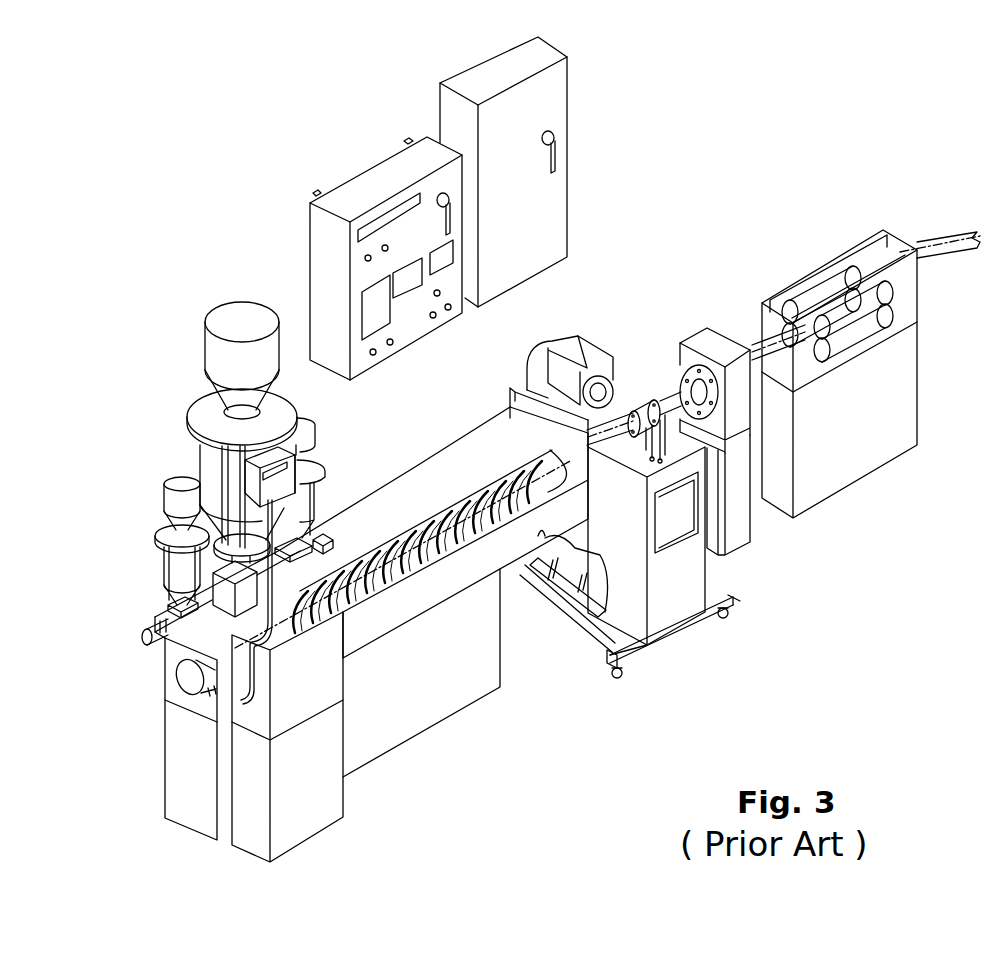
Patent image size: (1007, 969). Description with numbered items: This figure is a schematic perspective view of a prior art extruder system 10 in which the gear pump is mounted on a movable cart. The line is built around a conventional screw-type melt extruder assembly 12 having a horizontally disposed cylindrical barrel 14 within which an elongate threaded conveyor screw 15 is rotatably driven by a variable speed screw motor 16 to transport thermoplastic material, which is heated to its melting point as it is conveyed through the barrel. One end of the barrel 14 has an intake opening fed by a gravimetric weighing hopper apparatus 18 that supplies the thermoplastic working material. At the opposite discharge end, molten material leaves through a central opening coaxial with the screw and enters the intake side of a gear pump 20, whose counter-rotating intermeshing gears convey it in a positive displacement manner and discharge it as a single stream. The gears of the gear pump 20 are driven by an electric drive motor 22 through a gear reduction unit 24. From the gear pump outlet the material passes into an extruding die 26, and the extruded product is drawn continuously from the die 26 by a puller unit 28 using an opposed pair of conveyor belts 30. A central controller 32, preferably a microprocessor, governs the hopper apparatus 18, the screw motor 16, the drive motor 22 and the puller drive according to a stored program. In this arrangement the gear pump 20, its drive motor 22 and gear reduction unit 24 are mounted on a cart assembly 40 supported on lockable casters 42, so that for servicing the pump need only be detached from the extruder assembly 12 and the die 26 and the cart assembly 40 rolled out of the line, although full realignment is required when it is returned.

The extruder system 10 is at (820, 669).
The screw-type melt extruder assembly 12 is at (428, 617).
The extruder barrel 14 is at (470, 555).
The conveyor screw 15 is at (413, 533).
The screw motor 16 is at (325, 680).
The gravimetric weighing hopper apparatus 18 is at (215, 472).
The gear pump 20 is at (653, 398).
The drive motor 22 is at (550, 600).
The gear reduction unit 24 is at (565, 372).
The extruding die 26 is at (738, 422).
The puller unit 28 is at (883, 332).
The conveyor belts 30 is at (813, 282).
The central controller 32 is at (357, 190).
The cart assembly 40 is at (667, 593).
The lockable casters 42 is at (630, 670).